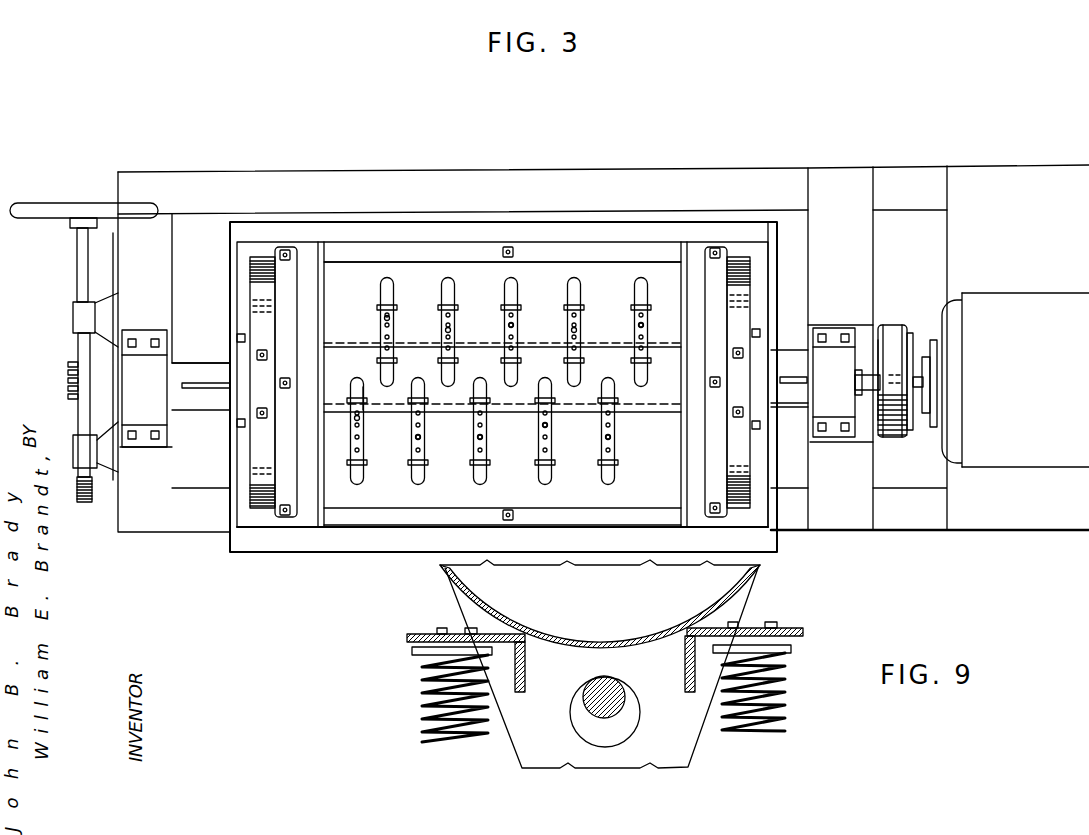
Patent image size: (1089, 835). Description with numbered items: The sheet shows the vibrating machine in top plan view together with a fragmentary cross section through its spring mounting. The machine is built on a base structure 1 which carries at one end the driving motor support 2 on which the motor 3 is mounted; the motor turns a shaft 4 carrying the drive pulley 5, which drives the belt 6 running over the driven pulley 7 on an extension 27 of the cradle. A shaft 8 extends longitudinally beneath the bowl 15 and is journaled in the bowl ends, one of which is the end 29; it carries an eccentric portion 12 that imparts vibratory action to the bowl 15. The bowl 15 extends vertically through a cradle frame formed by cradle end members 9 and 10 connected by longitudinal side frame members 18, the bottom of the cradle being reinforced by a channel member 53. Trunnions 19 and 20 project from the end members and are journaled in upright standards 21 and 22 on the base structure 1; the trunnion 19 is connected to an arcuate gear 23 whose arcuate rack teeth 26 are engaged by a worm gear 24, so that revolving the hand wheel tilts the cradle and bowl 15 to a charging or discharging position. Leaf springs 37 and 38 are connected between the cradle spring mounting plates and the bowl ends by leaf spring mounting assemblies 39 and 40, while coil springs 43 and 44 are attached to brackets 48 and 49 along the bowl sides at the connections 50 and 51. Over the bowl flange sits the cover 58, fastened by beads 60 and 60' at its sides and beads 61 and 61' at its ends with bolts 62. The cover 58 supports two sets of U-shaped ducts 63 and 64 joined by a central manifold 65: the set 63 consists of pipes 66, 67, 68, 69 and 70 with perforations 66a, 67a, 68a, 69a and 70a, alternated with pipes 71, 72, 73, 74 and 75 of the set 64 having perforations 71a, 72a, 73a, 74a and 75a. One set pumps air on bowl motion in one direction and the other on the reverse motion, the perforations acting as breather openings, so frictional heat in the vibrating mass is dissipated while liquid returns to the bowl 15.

In FIG. 3, the base structure 1 is at (797, 195).
In FIG. 3, the driving motor support 2 is at (1046, 517).
In FIG. 3, the motor 3 is at (1010, 310).
In FIG. 3, the shaft 4 is at (937, 378).
In FIG. 3, the drive pulley 5 is at (880, 348).
In FIG. 3, the belt 6 is at (902, 328).
In FIG. 3, the driven pulley 7 is at (917, 340).
In FIG. 3, the shaft 8 is at (775, 350).
In FIG. 9, the shaft 8 is at (607, 703).
In FIG. 3, the cradle end member 9 is at (230, 411).
In FIG. 3, the cradle end member 10 is at (773, 262).
In FIG. 9, the eccentric portion 12 is at (590, 727).
In FIG. 9, the bowl 15 is at (692, 614).
In FIG. 3, the longitudinal side frame member 18 is at (418, 232).
In FIG. 3, the trunnion 19 is at (178, 370).
In FIG. 3, the trunnion 20 is at (793, 367).
In FIG. 3, the upright standard 21 is at (163, 276).
In FIG. 3, the upright standard 22 is at (867, 230).
In FIG. 3, the arcuate gear 23 is at (85, 363).
In FIG. 3, the worm gear 24 is at (75, 393).
In FIG. 3, the arcuate rack teeth 26 is at (33, 203).
In FIG. 3, the extension 27 is at (792, 410).
In FIG. 9, the bowl end 29 is at (677, 748).
In FIG. 3, the leaf spring 37 is at (258, 257).
In FIG. 3, the leaf spring 38 is at (728, 470).
In FIG. 3, the leaf spring mounting assembly 39 is at (265, 375).
In FIG. 3, the leaf spring mounting assembly 40 is at (728, 372).
In FIG. 9, the coil spring 43 is at (432, 697).
In FIG. 9, the coil spring 44 is at (785, 695).
In FIG. 9, the bracket 48 is at (525, 672).
In FIG. 9, the bracket 49 is at (803, 631).
In FIG. 9, the coil spring connection 50 is at (442, 627).
In FIG. 9, the coil spring connection 51 is at (745, 627).
In FIG. 3, the channel member 53 is at (240, 438).
In FIG. 3, the cover 58 is at (347, 268).
In FIG. 3, the bead 60 is at (502, 555).
In FIG. 3, the bead 60' is at (502, 201).
In FIG. 3, the bead 61 is at (503, 408).
In FIG. 3, the bead 61' is at (742, 355).
In FIG. 3, the bolt 62 is at (285, 250).
In FIG. 3, the set of ducts 63 is at (640, 452).
In FIG. 3, the set of ducts 64 is at (357, 333).
In FIG. 3, the manifold 65 is at (391, 402).
In FIG. 3, the U-shaped pipe 66 is at (347, 500).
In FIG. 3, the perforation 66a is at (352, 417).
In FIG. 3, the U-shaped pipe 67 is at (425, 481).
In FIG. 3, the perforation 67a is at (413, 440).
In FIG. 3, the U-shaped pipe 68 is at (487, 482).
In FIG. 3, the perforation 68a is at (475, 437).
In FIG. 3, the U-shaped pipe 69 is at (551, 482).
In FIG. 3, the perforation 69a is at (541, 421).
In FIG. 3, the U-shaped pipe 70 is at (601, 479).
In FIG. 3, the perforation 70a is at (603, 436).
In FIG. 3, the pipe 71 is at (393, 280).
In FIG. 3, the perforation 71a is at (391, 318).
In FIG. 3, the pipe 72 is at (455, 280).
In FIG. 3, the perforation 72a is at (452, 330).
In FIG. 3, the pipe 73 is at (519, 279).
In FIG. 3, the perforation 73a is at (515, 325).
In FIG. 3, the pipe 74 is at (582, 279).
In FIG. 3, the perforation 74a is at (579, 330).
In FIG. 3, the pipe 75 is at (649, 279).
In FIG. 3, the perforation 75a is at (645, 325).